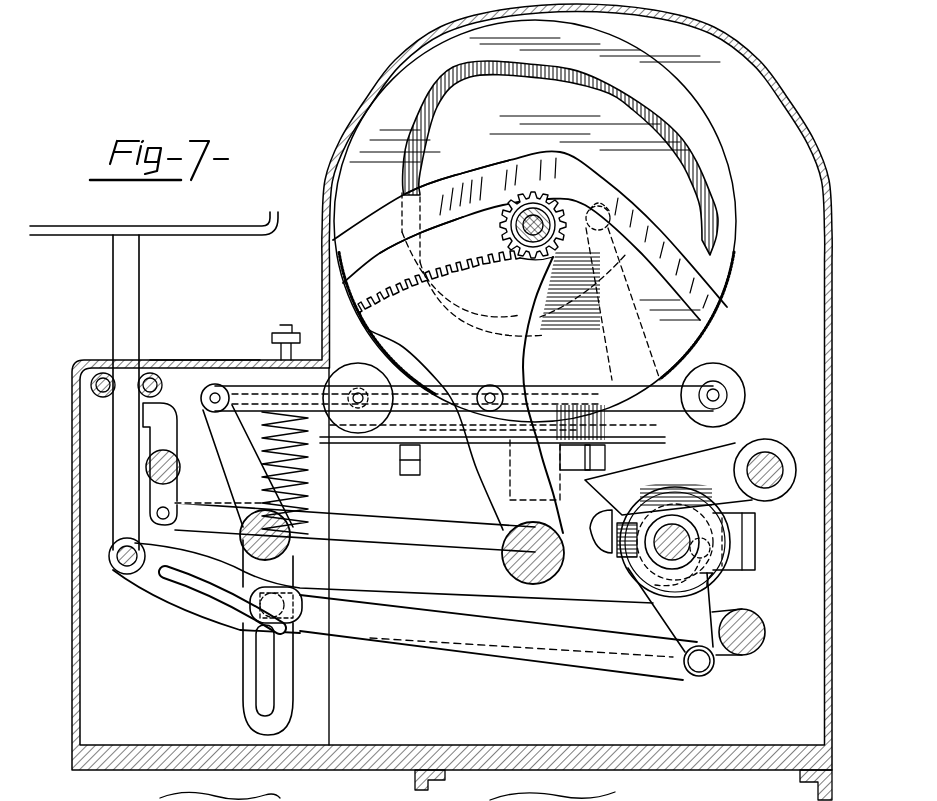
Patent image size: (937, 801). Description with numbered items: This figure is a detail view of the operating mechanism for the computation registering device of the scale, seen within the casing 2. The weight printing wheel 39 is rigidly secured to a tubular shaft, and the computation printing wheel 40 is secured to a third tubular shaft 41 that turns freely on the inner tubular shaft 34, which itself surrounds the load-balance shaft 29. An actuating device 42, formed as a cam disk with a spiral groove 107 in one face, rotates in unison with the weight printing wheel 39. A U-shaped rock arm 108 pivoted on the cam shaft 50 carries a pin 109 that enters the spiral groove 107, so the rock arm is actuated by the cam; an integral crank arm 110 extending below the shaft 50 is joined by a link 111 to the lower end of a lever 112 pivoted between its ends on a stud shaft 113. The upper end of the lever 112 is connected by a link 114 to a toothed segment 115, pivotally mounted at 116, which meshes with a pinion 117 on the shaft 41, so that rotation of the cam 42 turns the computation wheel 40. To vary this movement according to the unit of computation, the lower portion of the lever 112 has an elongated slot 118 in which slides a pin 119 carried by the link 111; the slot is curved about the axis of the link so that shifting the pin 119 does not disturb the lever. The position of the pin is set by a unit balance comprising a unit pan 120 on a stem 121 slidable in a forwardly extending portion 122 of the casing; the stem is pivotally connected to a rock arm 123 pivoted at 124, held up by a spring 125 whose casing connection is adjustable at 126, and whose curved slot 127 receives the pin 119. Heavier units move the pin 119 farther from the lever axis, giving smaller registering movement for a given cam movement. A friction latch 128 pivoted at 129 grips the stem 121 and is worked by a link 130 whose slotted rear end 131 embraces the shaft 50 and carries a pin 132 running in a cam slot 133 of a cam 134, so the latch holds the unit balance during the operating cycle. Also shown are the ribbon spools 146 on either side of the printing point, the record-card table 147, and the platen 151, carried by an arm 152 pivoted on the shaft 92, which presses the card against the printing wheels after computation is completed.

The casing 2 is at (386, 82).
The shaft 29 is at (534, 258).
The tubular shaft 34 is at (520, 233).
The weight printing wheel 39 is at (530, 235).
The computation printing wheel 40 is at (416, 255).
The third tubular shaft 41 is at (504, 212).
The actuating device 42 is at (434, 179).
The cam shaft 50 is at (657, 600).
The shaft 92 is at (778, 460).
The spiral groove 107 is at (700, 162).
The rock arm 108 is at (664, 452).
The pin 109 is at (623, 257).
The crank arm 110 is at (671, 622).
The link 111 is at (587, 661).
The lever 112 is at (243, 563).
The stud shaft 113 is at (247, 472).
The link 114 is at (464, 400).
The toothed segment 115 is at (451, 361).
The pivot 116 is at (503, 572).
The pinion 117 is at (544, 196).
The elongated slot 118 is at (257, 663).
The pin 119 is at (248, 632).
The unit pan 120 is at (235, 234).
The stem 121 is at (140, 318).
The forwardly extending portion of the casing 122 is at (219, 360).
The rock arm 123 is at (150, 584).
The pivot 124 is at (758, 618).
The spring 125 is at (320, 485).
The adjustable connection 126 is at (271, 337).
The curved slot 127 is at (193, 588).
The friction latch 128 is at (167, 418).
The pivot 129 is at (177, 477).
The link 130 is at (390, 535).
The slot 131 is at (619, 569).
The pin 132 is at (745, 545).
The cam slot 133 is at (677, 493).
The cam 134 is at (633, 504).
The spools 146 is at (350, 375).
The table 147 is at (388, 447).
The platen 151 is at (550, 478).
The platen arm 152 is at (592, 478).